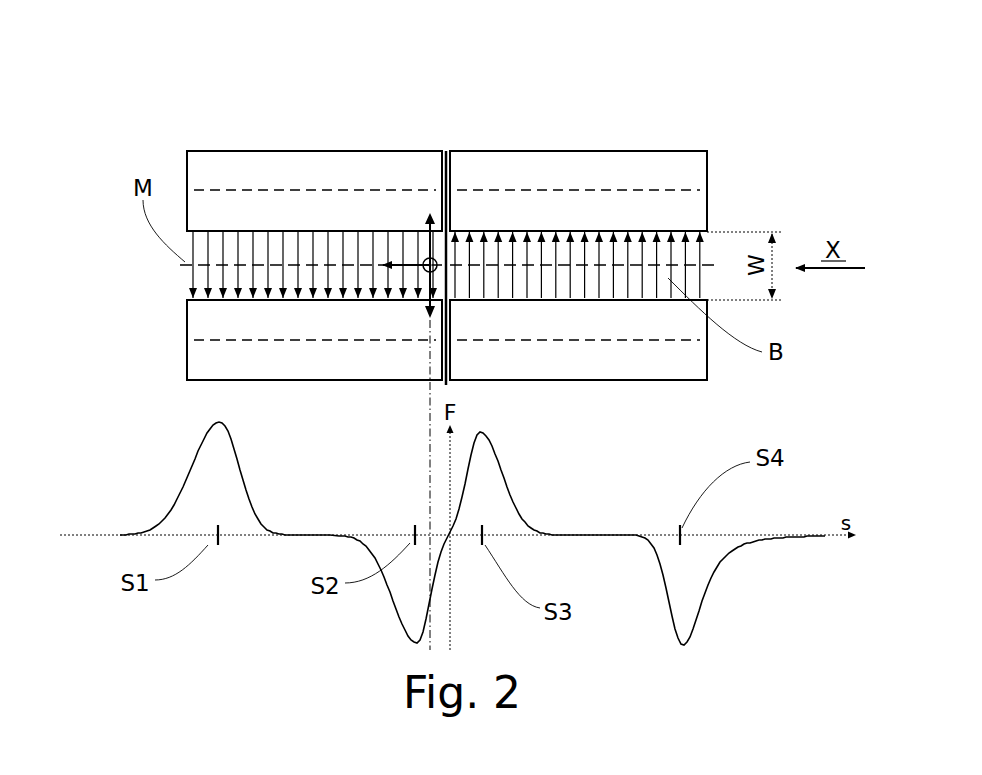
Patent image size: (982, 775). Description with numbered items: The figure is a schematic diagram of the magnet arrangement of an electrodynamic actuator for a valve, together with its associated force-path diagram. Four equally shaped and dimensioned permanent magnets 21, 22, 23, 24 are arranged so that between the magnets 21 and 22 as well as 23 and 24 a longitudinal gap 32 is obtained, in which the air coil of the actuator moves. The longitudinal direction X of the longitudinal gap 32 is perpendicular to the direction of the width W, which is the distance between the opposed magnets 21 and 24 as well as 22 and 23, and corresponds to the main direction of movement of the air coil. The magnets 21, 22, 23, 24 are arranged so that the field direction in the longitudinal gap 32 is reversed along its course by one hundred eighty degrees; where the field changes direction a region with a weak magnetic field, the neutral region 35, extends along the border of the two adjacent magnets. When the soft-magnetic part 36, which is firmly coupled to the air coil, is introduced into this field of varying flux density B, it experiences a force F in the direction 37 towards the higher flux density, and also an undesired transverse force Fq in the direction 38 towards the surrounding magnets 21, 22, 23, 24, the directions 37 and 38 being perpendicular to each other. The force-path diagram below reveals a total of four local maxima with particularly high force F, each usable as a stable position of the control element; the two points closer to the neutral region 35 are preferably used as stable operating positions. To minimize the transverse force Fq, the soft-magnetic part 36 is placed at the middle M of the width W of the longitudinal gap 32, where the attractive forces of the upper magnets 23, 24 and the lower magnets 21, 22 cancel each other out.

The permanent magnet 21 is at (183, 360).
The permanent magnet 22 is at (637, 377).
The permanent magnet 23 is at (630, 165).
The permanent magnet 24 is at (232, 157).
The longitudinal gap 32 is at (183, 277).
The neutral region 35 is at (446, 152).
The soft-magnetic part 36 is at (427, 213).
The direction of force F 37 is at (395, 223).
The direction of transverse force Fq 38 is at (456, 212).